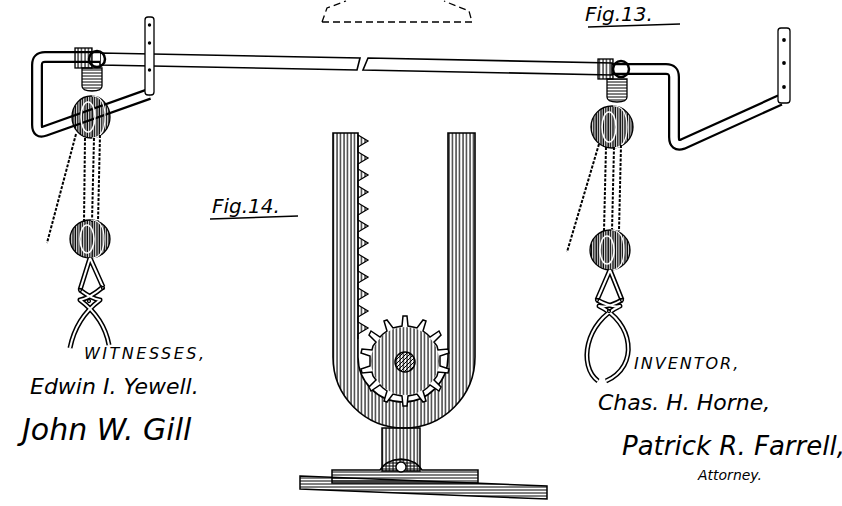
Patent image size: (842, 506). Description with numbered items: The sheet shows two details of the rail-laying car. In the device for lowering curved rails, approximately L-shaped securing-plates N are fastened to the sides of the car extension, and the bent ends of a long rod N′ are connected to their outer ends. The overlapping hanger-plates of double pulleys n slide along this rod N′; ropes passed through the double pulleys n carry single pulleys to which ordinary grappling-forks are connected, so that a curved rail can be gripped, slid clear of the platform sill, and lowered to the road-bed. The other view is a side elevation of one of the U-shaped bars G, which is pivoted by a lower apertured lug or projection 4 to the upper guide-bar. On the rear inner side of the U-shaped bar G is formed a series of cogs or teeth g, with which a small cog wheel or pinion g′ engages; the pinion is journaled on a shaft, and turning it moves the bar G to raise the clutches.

In FIG. 13, the securing-plates N is at (156, 32).
In FIG. 13, the rod N′ is at (478, 47).
In FIG. 13, the double pulleys n is at (111, 122).
In FIG. 14, the cogs or teeth g is at (372, 237).
In FIG. 14, the U-shaped bars G is at (417, 280).
In FIG. 14, the cog wheel or pinion g′ is at (405, 361).
In FIG. 14, the apertured lug or projection 4 is at (421, 448).